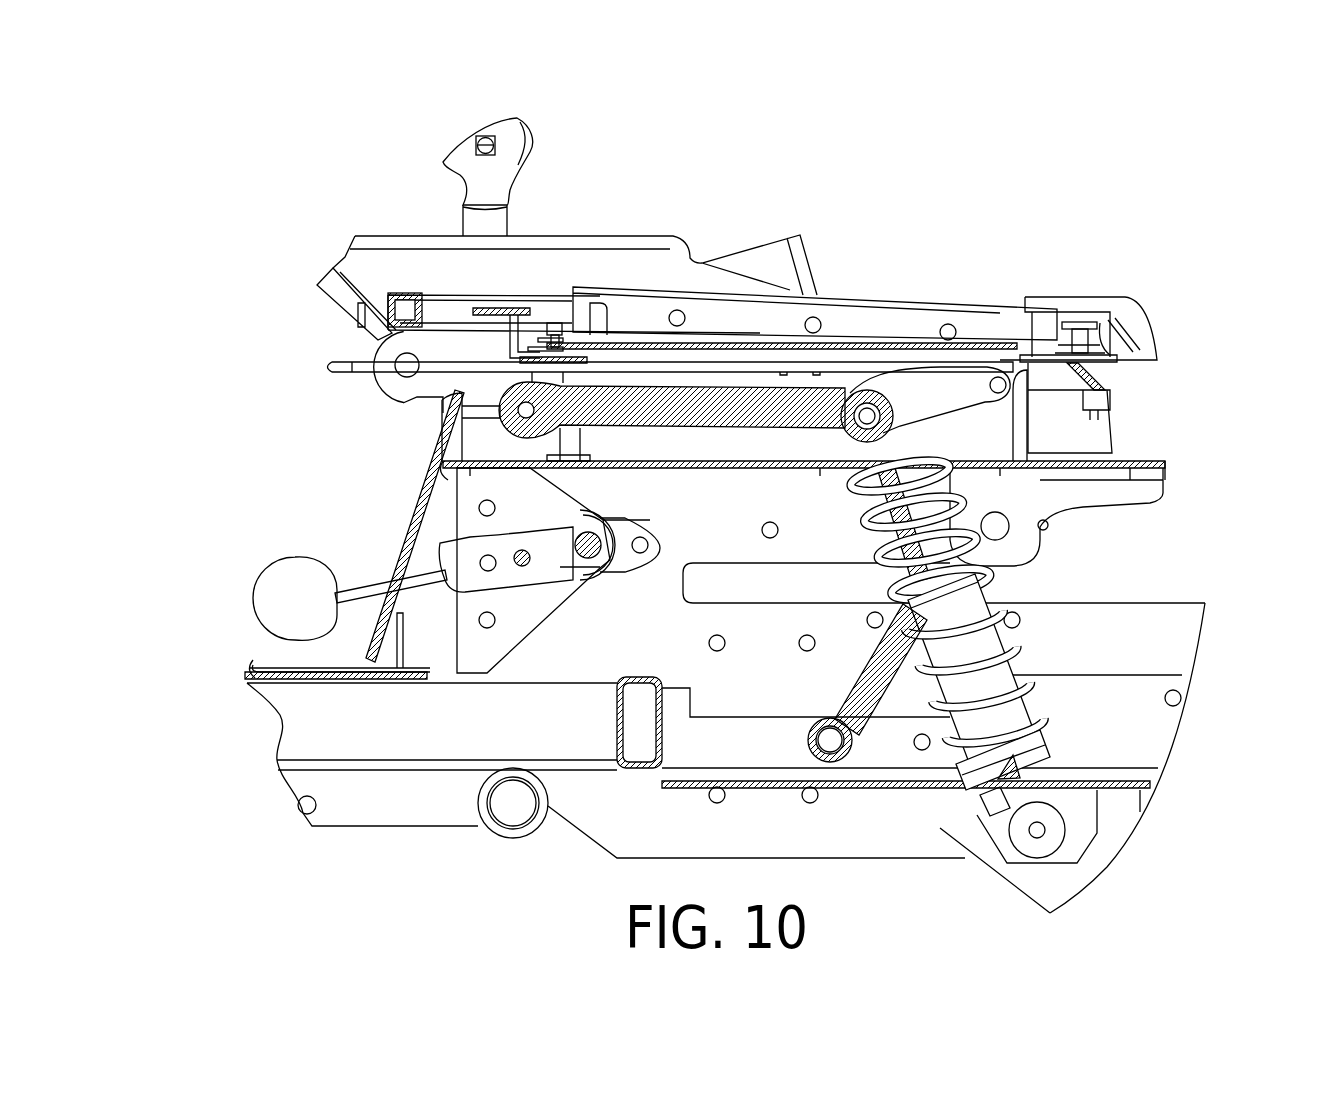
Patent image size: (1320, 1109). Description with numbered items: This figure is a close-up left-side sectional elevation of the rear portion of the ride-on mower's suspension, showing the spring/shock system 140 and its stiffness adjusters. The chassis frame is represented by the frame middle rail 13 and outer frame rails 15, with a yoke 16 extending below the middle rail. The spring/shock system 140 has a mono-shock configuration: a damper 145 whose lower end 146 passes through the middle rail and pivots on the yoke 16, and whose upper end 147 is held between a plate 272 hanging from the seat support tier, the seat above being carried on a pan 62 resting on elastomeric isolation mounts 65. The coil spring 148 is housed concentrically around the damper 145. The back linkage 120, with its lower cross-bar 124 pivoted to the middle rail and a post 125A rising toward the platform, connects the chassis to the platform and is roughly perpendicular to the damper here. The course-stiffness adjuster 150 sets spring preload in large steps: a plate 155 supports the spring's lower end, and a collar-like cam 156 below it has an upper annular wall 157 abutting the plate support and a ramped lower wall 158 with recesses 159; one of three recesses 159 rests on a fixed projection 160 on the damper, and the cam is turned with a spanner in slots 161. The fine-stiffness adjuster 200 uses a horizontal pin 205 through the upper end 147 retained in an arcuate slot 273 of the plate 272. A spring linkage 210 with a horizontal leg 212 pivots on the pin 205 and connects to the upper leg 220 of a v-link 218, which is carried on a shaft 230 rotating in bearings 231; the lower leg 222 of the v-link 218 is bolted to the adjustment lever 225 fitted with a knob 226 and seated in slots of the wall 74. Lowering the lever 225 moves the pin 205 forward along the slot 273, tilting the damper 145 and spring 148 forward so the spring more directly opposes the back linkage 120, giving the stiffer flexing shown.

The frame middle rail 13 is at (660, 750).
The outer frame rails 15 is at (390, 744).
The yoke 16 is at (1077, 810).
The pan 62 is at (1085, 372).
The isolation mounts 65 is at (590, 440).
The wall 74 is at (417, 567).
The back linkage 120 is at (790, 710).
The lower cross-bar 124 is at (810, 750).
The post 125A is at (870, 660).
The spring/shock system 140 is at (843, 586).
The damper 145 is at (977, 643).
The lower end 146 is at (980, 820).
The upper end 147 is at (833, 485).
The coil spring 148 is at (1025, 582).
The course-stiffness adjuster 150 is at (1170, 673).
The plate 155 is at (972, 720).
The cam 156 is at (1130, 765).
The upper annular wall 157 is at (1033, 727).
The ramped lower wall 158 is at (1010, 820).
The recesses 159 is at (1040, 770).
The projection 160 is at (990, 786).
The slots 161 is at (1190, 655).
The fine-stiffness adjuster 200 is at (533, 645).
The pin 205 is at (867, 410).
The spring linkage 210 is at (481, 378).
The horizontal leg 212 is at (670, 375).
The v-link 218 is at (600, 522).
The upper leg 220 is at (533, 450).
The lower leg 222 is at (503, 547).
The adjustment lever 225 is at (498, 597).
The knob 226 is at (273, 587).
The shaft 230 is at (600, 588).
The bearings 231 is at (622, 520).
The plate 272 is at (1010, 456).
The arcuate slot 273 is at (967, 383).